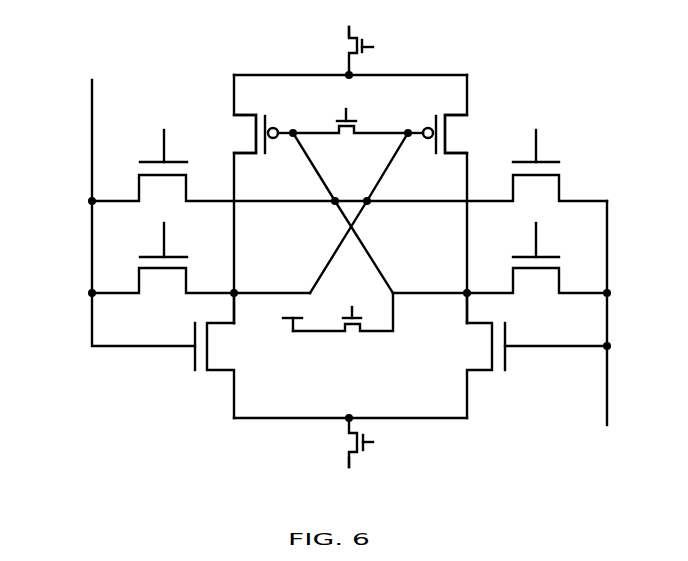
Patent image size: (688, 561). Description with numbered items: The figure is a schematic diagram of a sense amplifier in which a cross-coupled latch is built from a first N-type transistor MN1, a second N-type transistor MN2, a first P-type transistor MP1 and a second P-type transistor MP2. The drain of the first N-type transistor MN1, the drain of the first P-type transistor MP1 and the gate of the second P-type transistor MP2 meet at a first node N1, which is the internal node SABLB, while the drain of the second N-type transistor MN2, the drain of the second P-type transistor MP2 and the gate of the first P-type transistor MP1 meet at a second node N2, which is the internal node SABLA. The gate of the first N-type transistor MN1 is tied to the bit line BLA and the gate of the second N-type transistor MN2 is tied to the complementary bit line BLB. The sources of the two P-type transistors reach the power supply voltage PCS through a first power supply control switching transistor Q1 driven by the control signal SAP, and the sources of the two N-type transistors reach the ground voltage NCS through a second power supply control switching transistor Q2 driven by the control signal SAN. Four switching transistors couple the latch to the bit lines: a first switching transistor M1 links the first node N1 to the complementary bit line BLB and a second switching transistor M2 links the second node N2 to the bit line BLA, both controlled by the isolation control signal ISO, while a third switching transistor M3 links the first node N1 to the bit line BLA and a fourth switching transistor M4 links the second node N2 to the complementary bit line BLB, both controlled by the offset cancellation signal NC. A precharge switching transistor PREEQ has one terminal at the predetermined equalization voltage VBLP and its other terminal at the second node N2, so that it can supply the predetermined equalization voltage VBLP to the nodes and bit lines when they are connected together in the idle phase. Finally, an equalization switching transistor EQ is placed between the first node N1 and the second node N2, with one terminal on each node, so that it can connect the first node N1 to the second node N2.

The first power supply control switching transistor Q1 is at (337, 51).
The second power supply control switching transistor Q2 is at (338, 442).
The first P-type transistor MP1 is at (250, 134).
The second P-type transistor MP2 is at (454, 134).
The first N-type transistor MN1 is at (236, 370).
The second N-type transistor MN2 is at (466, 370).
The equalization switching transistor EQ is at (350, 138).
The precharge switching transistor PREEQ is at (343, 330).
The first switching transistor M1 is at (537, 181).
The second switching transistor M2 is at (163, 181).
The third switching transistor M3 is at (163, 294).
The fourth switching transistor M4 is at (537, 293).
The power supply voltage PCS is at (356, 24).
The ground voltage NCS is at (360, 479).
The control signal of the first power supply control switching transistor SAP is at (389, 57).
The control signal of the second power supply control switching transistor SAN is at (390, 453).
The isolation control signal ISO is at (369, 147).
The offset cancellation signal NC is at (370, 242).
The bit line BLA is at (123, 213).
The complementary bit line BLB is at (556, 313).
The internal node SABLA is at (367, 213).
The internal node SABLB is at (329, 213).
The first node N1 is at (252, 308).
The second node N2 is at (452, 308).
The predetermined equalization voltage VBLP is at (302, 314).